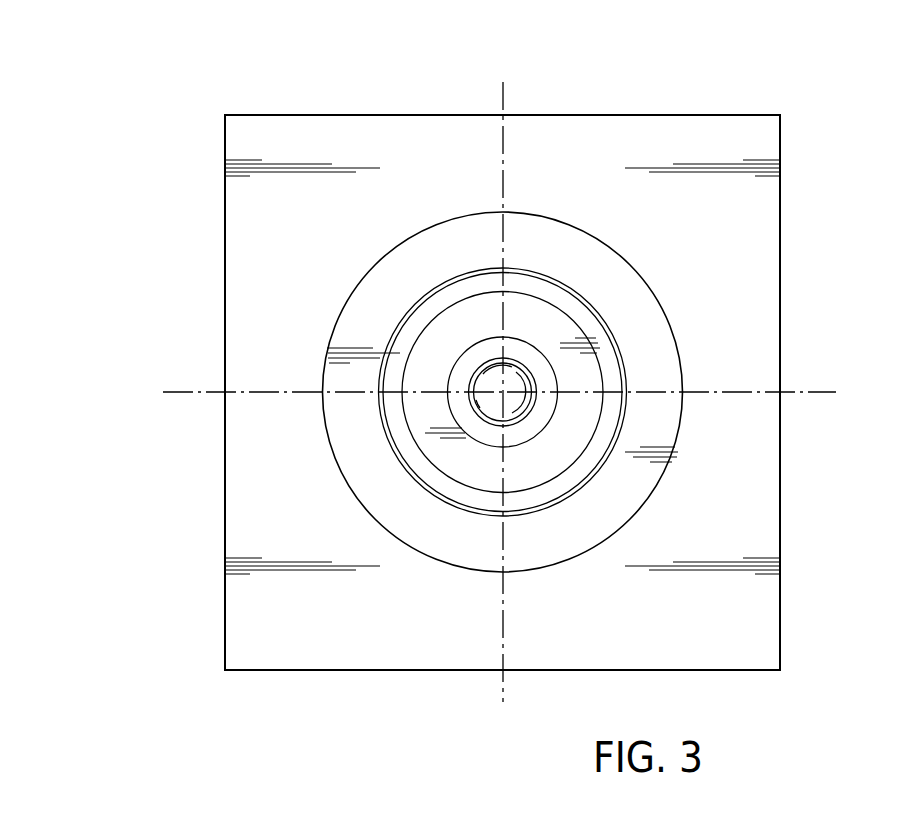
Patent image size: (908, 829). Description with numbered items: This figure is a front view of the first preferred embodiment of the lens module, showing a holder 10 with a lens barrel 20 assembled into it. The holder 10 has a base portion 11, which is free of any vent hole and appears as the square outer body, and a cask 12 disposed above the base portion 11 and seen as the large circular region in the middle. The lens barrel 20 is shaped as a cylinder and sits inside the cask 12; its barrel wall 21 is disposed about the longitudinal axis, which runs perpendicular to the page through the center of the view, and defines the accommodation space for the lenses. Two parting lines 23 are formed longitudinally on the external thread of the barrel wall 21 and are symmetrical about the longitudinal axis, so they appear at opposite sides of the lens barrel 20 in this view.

The holder 10 is at (781, 205).
The base portion 11 is at (729, 133).
The cask 12 is at (613, 265).
The lens barrel 20 is at (413, 305).
The barrel wall 21 is at (400, 345).
The parting lines 23 is at (502, 283).